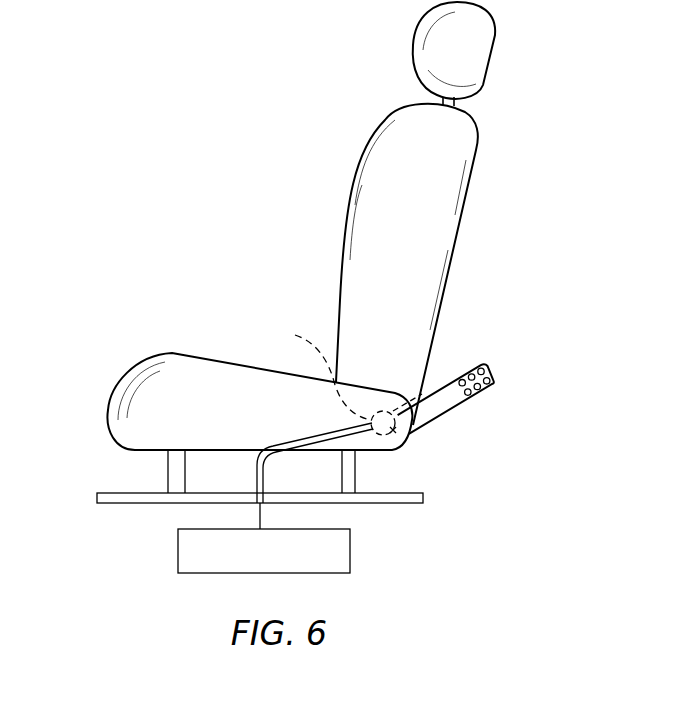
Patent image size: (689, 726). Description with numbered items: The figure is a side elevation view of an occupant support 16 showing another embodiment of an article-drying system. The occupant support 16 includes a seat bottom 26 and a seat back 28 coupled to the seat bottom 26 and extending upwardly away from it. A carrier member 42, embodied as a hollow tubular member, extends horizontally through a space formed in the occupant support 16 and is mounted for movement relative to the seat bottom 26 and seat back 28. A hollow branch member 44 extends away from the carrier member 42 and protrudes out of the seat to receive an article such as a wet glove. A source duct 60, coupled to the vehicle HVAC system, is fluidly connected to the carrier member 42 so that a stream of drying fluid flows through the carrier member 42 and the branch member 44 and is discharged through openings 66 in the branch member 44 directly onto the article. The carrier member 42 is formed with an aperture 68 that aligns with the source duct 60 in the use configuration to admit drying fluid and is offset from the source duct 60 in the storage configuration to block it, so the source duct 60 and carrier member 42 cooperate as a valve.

The occupant support 16 is at (183, 228).
The seat bottom 26 is at (127, 341).
The seat back 28 is at (463, 204).
The carrier member 42 is at (317, 371).
The branch member 44 is at (492, 372).
The source duct 60 is at (253, 480).
The openings 66 is at (476, 393).
The aperture 68 is at (404, 443).